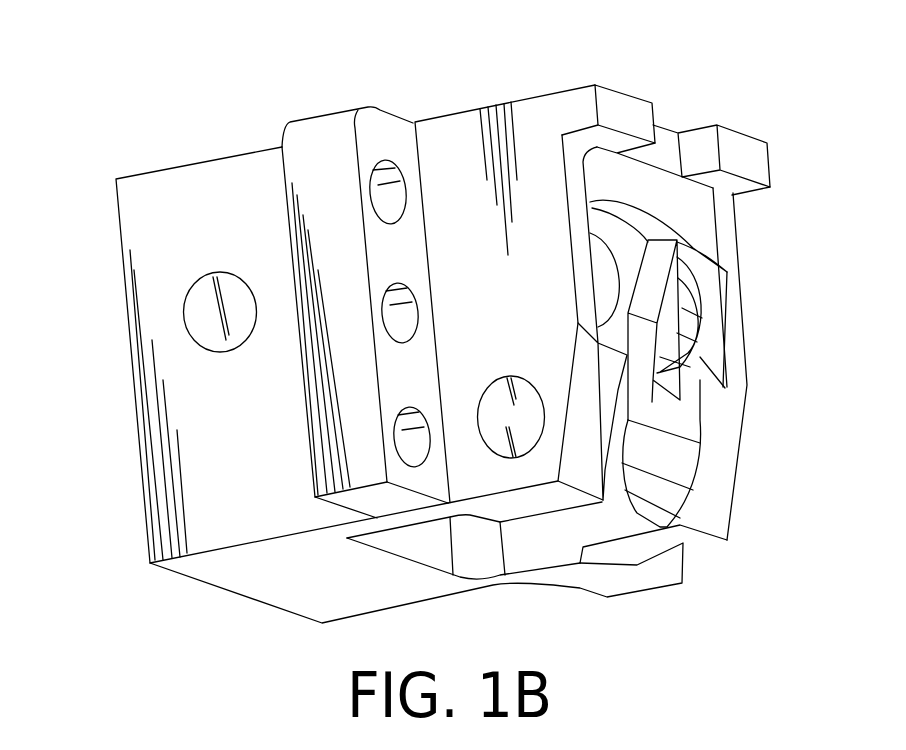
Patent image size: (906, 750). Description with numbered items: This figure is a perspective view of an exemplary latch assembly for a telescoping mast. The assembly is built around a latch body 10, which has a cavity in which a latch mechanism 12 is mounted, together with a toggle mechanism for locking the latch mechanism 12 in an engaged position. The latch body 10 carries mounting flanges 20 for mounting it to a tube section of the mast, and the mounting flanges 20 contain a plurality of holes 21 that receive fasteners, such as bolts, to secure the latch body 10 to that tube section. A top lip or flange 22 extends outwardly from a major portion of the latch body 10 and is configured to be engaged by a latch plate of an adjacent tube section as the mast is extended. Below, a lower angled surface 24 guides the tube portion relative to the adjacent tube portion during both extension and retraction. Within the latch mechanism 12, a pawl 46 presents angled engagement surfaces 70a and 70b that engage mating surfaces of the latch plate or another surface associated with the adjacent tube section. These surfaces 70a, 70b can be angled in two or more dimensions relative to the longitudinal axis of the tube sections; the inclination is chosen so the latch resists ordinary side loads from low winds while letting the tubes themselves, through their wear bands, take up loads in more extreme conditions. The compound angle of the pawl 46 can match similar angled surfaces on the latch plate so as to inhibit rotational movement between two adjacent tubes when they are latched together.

The latch body 10 is at (137, 234).
The latch mechanism 12 is at (747, 487).
The mounting flanges 20 is at (320, 125).
The holes 21 is at (390, 162).
The top lip or flange 22 is at (608, 102).
The lower angled surface 24 is at (575, 472).
The pawl 46 is at (680, 420).
The angled engagement surface 70a is at (633, 207).
The angled engagement surface 70b is at (707, 256).